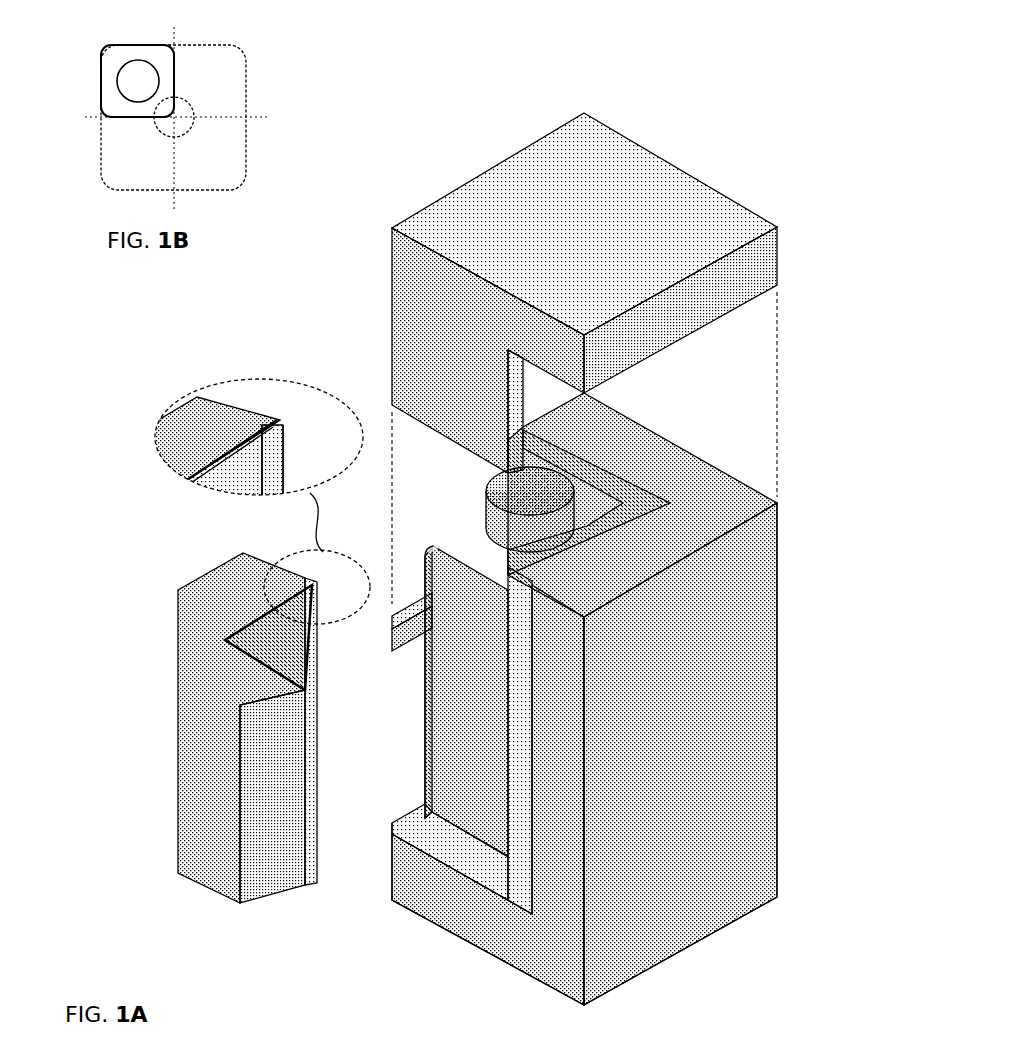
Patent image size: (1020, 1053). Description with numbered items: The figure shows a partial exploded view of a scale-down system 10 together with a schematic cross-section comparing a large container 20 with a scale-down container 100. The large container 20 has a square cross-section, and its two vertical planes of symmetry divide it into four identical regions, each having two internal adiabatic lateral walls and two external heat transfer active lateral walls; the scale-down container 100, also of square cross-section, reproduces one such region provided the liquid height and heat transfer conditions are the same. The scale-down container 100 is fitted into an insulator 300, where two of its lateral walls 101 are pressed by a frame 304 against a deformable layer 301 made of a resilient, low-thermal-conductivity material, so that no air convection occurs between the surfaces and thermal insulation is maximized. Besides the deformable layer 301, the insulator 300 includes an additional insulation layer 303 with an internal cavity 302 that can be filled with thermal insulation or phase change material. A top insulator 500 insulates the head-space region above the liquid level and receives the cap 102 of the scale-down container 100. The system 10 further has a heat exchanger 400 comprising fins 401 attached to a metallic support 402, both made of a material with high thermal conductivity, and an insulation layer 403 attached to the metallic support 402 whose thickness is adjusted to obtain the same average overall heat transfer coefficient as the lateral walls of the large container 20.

In FIG. 1A, the scale-down system 10 is at (401, 146).
In FIG. 1B, the large container 20 is at (246, 90).
In FIG. 1B, the scale-down container 100 is at (100, 71).
In FIG. 1A, the scale-down container 100 is at (465, 648).
In FIG. 1A, the lateral walls 101 is at (427, 777).
In FIG. 1A, the cap 102 is at (487, 517).
In FIG. 1A, the insulator 300 is at (604, 694).
In FIG. 1A, the deformable layer 301 is at (648, 440).
In FIG. 1A, the internal cavity 302 is at (690, 460).
In FIG. 1A, the additional insulation layer 303 is at (467, 940).
In FIG. 1A, the frame 304 is at (403, 648).
In FIG. 1A, the heat exchanger 400 is at (220, 625).
In FIG. 1A, the fins 401 is at (227, 900).
In FIG. 1A, the metallic support 402 is at (257, 420).
In FIG. 1A, the insulation layer 403 is at (273, 420).
In FIG. 1A, the top insulator 500 is at (650, 136).